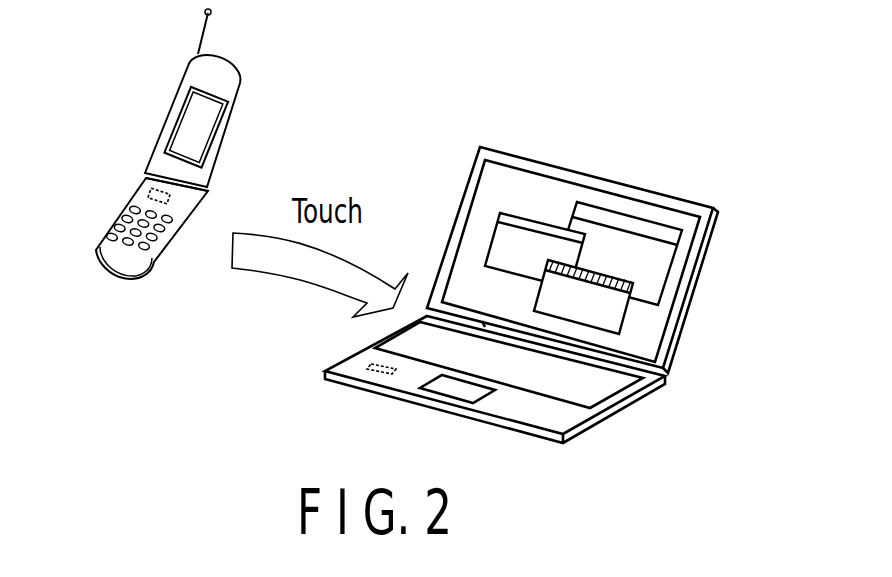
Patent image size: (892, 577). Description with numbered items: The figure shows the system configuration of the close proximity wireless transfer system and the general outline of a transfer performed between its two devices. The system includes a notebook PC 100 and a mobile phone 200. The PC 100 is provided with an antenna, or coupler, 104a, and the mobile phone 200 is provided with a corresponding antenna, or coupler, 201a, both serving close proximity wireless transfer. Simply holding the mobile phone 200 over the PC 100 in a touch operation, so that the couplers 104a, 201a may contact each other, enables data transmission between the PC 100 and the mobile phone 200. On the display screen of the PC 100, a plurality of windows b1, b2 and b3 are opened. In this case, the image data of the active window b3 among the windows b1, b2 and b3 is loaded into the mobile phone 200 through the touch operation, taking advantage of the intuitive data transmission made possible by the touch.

The notebook PC 100 is at (680, 378).
The antenna (coupler) 104a is at (380, 373).
The mobile phone 200 is at (146, 172).
The antenna (coupler) 201a is at (138, 192).
The window b1 is at (647, 253).
The window b2 is at (515, 238).
The active window b3 is at (617, 315).